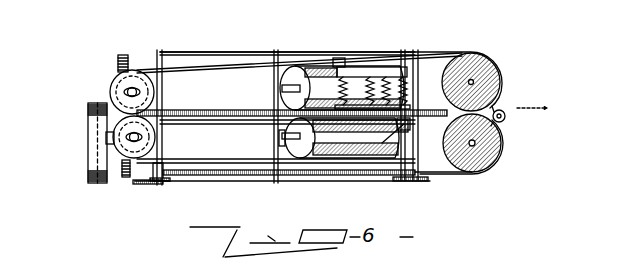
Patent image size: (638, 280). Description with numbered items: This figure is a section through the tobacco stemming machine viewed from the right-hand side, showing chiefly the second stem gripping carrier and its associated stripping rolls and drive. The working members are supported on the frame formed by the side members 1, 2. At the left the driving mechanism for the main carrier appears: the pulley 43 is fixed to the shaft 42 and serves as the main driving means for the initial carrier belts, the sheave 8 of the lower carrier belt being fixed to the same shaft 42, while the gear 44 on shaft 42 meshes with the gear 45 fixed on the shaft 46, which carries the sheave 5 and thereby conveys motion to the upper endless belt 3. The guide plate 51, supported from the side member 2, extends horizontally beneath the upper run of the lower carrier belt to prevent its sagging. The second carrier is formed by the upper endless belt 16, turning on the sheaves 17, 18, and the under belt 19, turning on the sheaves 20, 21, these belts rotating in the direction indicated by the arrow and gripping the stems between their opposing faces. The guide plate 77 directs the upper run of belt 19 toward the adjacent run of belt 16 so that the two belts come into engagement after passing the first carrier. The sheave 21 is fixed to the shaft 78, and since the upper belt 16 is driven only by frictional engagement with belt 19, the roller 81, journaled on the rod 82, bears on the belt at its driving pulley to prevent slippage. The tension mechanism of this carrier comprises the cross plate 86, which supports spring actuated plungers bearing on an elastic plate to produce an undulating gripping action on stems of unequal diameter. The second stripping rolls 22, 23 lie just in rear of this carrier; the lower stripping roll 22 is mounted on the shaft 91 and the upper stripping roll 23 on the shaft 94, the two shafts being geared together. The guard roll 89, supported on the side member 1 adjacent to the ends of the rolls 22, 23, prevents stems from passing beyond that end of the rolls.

The side member 1 is at (412, 178).
The side member 2 is at (151, 185).
The upper endless belt 3 is at (253, 56).
The rear sheave 5 is at (278, 56).
The rear sheave 8 is at (171, 178).
The upper endless belt 16 is at (457, 38).
The sheave 17 is at (131, 70).
The sheave 18 is at (486, 72).
The under belt 19 is at (458, 173).
The sheave 20 is at (120, 158).
The sheave 21 is at (496, 150).
The lower stripping roll 22 is at (326, 148).
The upper stripping roll 23 is at (342, 57).
The shaft 42 is at (281, 146).
The pulley 43 is at (95, 137).
The gear 44 is at (124, 172).
The gear 45 is at (121, 54).
The shaft 46 is at (181, 69).
The guide plate 51 is at (162, 111).
The guide plate 77 is at (283, 135).
The shaft 78 is at (474, 145).
The roller 81 is at (506, 119).
The rod 82 is at (502, 111).
The cross plate 86 is at (362, 70).
The guard roll 89 is at (397, 128).
The shaft 91 is at (281, 143).
The shaft 94 is at (281, 96).